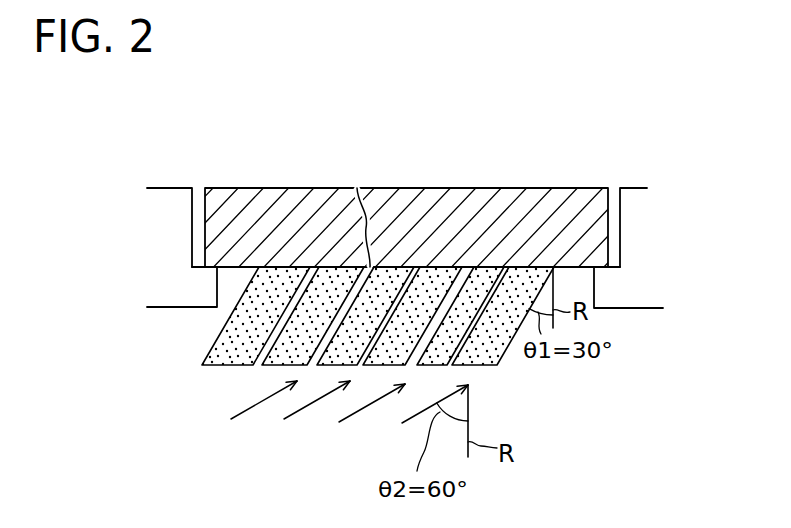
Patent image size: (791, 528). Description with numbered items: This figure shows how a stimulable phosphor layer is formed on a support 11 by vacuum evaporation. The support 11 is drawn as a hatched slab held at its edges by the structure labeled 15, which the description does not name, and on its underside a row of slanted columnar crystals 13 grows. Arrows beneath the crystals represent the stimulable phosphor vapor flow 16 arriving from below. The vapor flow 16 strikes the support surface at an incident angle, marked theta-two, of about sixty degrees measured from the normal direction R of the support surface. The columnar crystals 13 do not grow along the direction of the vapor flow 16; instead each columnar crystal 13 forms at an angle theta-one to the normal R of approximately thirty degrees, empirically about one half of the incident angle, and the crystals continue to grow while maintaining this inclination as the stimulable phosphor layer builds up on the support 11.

The support 11 is at (245, 196).
The columnar crystal 13 is at (206, 367).
The mask 15 is at (177, 201).
The stimulable phosphor vapor flow 16 is at (402, 419).